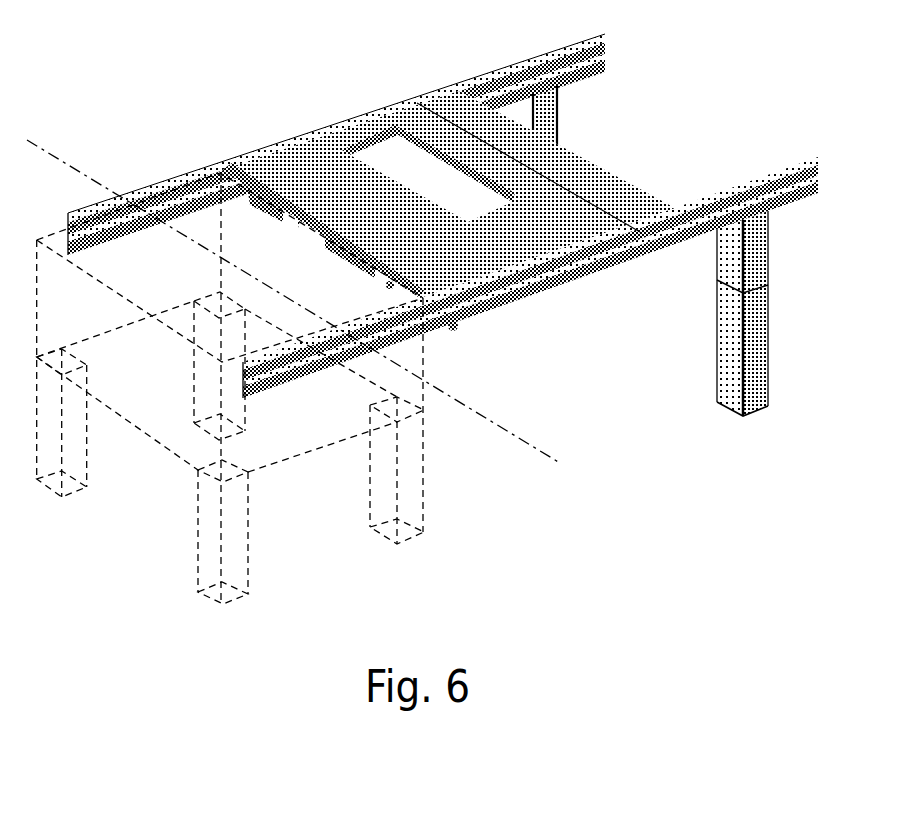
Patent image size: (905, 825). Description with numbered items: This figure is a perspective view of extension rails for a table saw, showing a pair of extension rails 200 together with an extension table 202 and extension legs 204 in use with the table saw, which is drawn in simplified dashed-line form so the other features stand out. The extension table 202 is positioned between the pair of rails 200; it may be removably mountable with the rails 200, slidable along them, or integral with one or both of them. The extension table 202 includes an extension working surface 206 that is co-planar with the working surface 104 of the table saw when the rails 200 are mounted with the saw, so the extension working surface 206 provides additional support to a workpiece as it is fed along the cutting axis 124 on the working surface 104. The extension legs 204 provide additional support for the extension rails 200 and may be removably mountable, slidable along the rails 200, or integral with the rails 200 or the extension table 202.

The extension rails 200 is at (432, 225).
The extension table 202 is at (443, 225).
The extension legs 204 is at (650, 251).
The extension working surface 206 is at (446, 194).
The working surface 104 is at (230, 388).
The cutting axis 124 is at (294, 320).